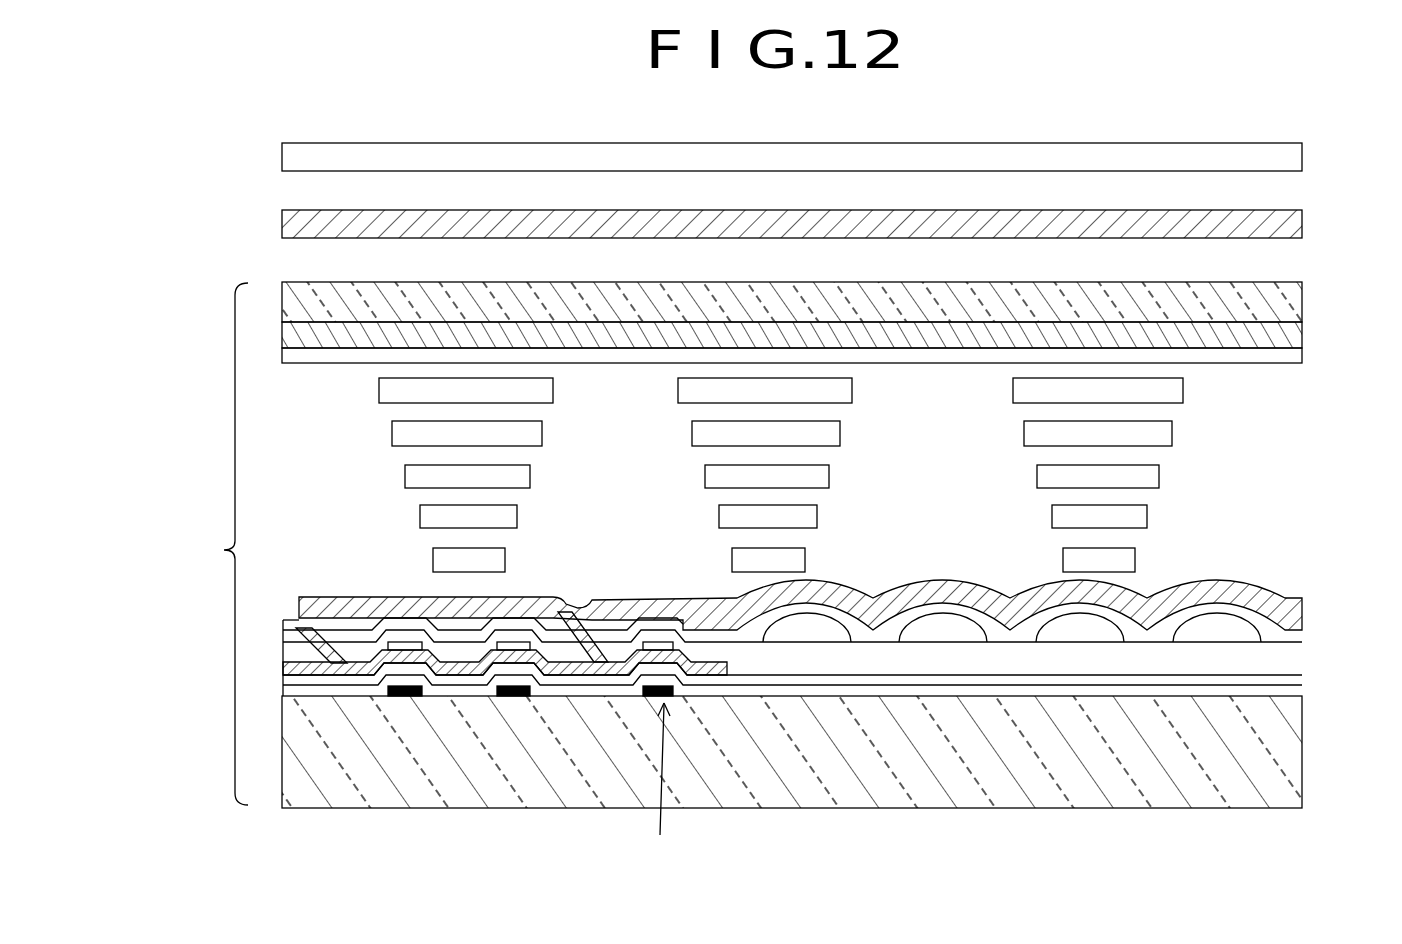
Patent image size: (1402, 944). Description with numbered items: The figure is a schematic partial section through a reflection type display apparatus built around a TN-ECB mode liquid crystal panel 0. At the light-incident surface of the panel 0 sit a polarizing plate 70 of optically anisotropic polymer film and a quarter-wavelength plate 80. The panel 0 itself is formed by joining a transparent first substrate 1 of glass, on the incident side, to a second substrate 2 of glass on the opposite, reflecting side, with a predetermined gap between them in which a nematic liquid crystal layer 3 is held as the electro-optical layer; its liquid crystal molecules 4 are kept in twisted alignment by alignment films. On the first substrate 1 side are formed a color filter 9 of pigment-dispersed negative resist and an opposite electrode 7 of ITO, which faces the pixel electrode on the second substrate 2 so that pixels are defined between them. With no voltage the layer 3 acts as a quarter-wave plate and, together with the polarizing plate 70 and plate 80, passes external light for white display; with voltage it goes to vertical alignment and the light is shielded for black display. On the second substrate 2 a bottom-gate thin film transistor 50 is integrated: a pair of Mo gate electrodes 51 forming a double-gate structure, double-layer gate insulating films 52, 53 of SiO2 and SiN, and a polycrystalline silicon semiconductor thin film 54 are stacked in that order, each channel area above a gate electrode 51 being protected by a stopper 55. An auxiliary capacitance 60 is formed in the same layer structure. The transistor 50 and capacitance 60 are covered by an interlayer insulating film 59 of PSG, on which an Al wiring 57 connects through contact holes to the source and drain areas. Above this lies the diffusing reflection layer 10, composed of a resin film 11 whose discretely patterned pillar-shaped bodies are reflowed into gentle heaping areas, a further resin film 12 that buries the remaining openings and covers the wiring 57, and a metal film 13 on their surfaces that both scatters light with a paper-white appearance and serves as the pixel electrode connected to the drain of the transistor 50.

The polarizing plate 70 is at (1302, 158).
The (¼)-wavelength plate 80 is at (1302, 228).
The first substrate 1 is at (1302, 300).
The color filter 9 is at (1302, 336).
The opposite electrode 7 is at (1302, 356).
The liquid crystal molecules 4 is at (1183, 392).
The nematic liquid crystal layer 3 is at (819, 473).
The liquid crystal panel 0 is at (219, 544).
The second substrate 2 is at (1302, 745).
The gate electrode 51 is at (410, 697).
The thin film transistor 50 is at (792, 772).
The gate insulating film 52 is at (930, 677).
The gate insulating film 53 is at (1015, 678).
The stopper 55 is at (398, 640).
The interlayer insulating film 59 is at (1302, 655).
The semiconductor thin film 54 is at (706, 656).
The wiring 57 is at (305, 642).
The auxiliary capacitance 60 is at (657, 786).
The diffusing reflection layer 10 is at (833, 573).
The metal film 13 is at (1220, 590).
The resin film 11 is at (1217, 632).
The resin film 12 is at (447, 628).